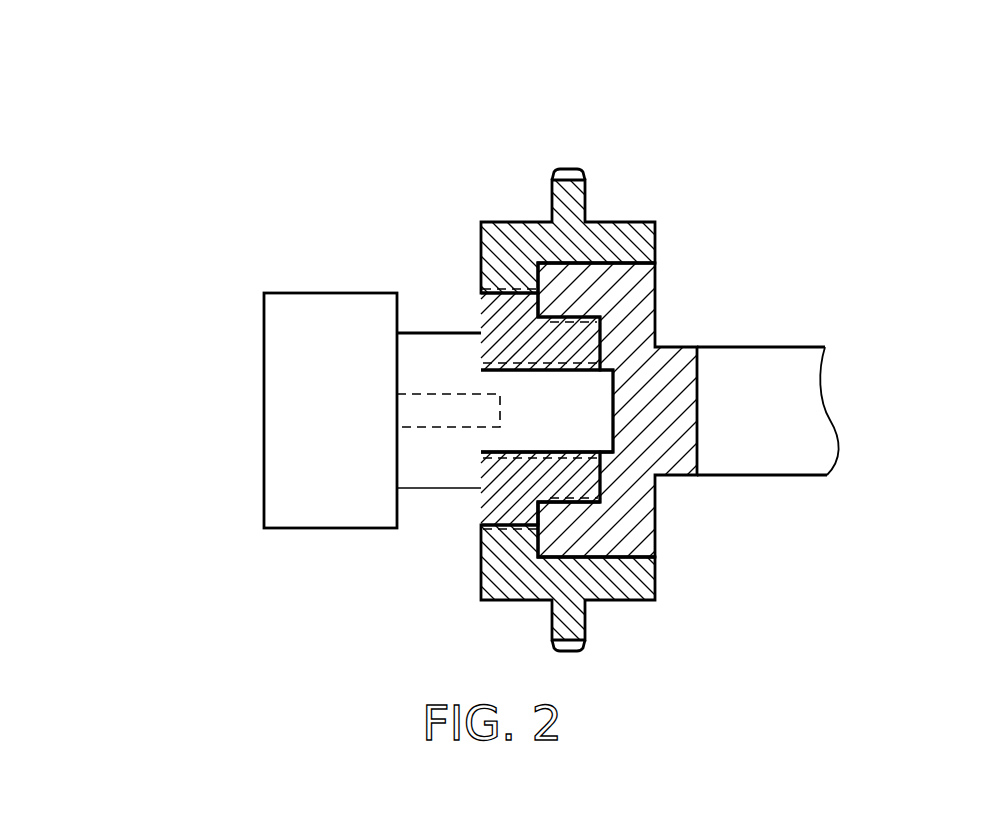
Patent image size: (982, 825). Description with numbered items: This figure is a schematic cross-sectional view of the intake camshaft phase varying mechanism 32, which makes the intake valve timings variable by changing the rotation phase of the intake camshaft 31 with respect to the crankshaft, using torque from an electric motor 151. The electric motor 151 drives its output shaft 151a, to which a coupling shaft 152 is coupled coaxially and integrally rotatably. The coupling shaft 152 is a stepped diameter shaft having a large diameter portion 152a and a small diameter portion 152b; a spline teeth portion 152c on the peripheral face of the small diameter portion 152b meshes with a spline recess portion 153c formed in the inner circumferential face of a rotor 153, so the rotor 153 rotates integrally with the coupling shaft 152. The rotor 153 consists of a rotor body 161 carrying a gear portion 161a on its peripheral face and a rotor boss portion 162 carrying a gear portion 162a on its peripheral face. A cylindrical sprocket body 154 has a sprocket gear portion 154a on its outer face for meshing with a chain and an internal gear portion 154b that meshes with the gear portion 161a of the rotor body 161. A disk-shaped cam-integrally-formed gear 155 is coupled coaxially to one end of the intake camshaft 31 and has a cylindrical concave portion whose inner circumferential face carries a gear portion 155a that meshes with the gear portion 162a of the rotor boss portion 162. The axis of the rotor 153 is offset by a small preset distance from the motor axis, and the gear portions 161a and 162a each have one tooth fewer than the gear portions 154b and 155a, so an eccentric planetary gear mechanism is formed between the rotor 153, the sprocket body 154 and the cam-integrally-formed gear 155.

The intake camshaft 31 is at (797, 360).
The intake camshaft phase varying mechanism 32 is at (428, 120).
The electric motor 151 is at (327, 293).
The output shaft 151a is at (425, 409).
The coupling shaft 152 is at (440, 333).
The large diameter portion 152a is at (415, 443).
The small diameter portion 152b is at (535, 425).
The spline teeth portion 152c is at (535, 502).
The rotor 153 is at (752, 528).
The spline recess portion 153c is at (570, 450).
The sprocket body 154 is at (582, 202).
The sprocket gear portion 154a is at (570, 170).
The gear portion 154b is at (507, 291).
The cam-integrally-formed gear 155 is at (637, 283).
The gear portion 155a is at (560, 484).
The rotor body 161 is at (610, 575).
The gear portion 161a is at (520, 548).
The rotor boss portion 162 is at (560, 505).
The gear portion 162a is at (572, 318).